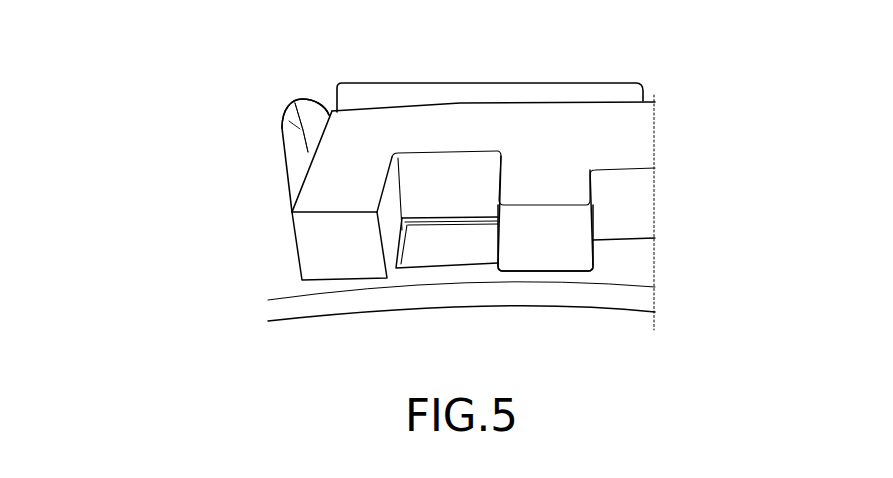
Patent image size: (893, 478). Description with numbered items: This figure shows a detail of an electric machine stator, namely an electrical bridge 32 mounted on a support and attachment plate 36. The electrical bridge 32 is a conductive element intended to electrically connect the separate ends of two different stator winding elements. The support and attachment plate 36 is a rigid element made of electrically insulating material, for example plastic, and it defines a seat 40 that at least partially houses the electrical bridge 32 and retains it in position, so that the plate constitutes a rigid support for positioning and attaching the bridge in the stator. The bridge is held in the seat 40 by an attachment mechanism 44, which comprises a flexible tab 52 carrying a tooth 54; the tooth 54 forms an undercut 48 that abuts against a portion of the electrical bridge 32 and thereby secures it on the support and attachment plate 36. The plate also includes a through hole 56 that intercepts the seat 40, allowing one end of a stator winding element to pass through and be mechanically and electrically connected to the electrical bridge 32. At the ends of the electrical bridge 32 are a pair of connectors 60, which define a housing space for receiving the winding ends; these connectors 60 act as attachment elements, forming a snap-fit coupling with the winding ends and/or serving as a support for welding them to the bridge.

The electrical bridge 32 is at (595, 137).
The support and attachment plate 36 is at (648, 292).
The seat 40 is at (626, 239).
The attachment mechanism 44 is at (293, 107).
The undercut 48 is at (303, 156).
The flexible tab 52 is at (267, 67).
The tooth 54 is at (206, 161).
The through hole 56 is at (436, 252).
The connector 60 is at (337, 248).